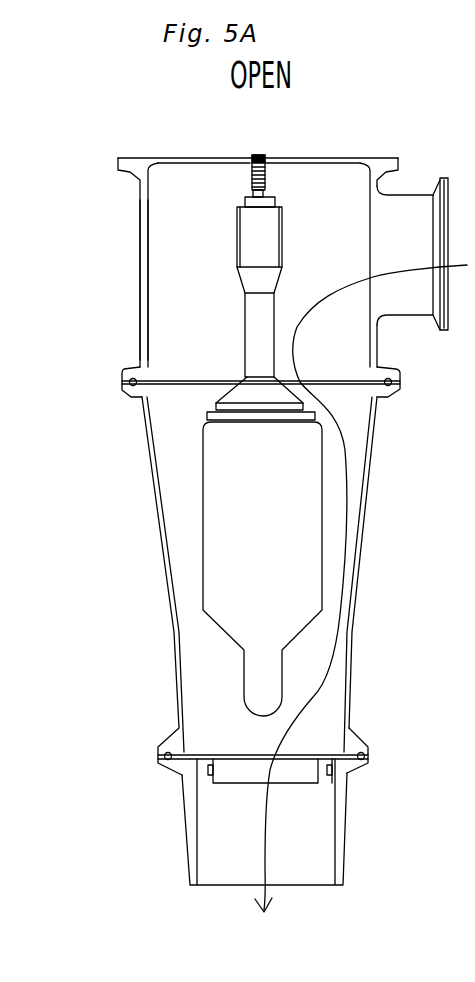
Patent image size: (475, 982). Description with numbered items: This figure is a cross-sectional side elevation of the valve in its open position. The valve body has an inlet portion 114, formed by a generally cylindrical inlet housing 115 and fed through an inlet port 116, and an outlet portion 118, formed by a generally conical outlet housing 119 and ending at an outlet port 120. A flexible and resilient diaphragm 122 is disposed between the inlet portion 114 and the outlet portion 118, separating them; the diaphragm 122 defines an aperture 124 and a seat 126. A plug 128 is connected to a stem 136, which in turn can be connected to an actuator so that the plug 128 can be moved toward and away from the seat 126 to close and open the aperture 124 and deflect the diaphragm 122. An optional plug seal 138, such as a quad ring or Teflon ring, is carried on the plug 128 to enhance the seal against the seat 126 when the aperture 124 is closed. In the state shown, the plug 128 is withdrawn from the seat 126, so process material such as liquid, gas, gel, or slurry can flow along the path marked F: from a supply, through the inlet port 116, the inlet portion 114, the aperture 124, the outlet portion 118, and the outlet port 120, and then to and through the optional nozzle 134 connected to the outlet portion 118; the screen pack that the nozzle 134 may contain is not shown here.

The inlet portion 114 is at (190, 217).
The inlet housing 115 is at (143, 262).
The inlet port 116 is at (460, 223).
The outlet portion 118 is at (332, 710).
The outlet housing 119 is at (357, 613).
The outlet port 120 is at (221, 802).
The diaphragm 122 is at (474, 436).
The aperture 124 is at (228, 368).
The seat 126 is at (213, 398).
The plug 128 is at (230, 540).
The nozzle 134 is at (347, 810).
The stem 136 is at (273, 238).
The plug seal 138 is at (207, 420).
The fluid flow path F is at (403, 264).